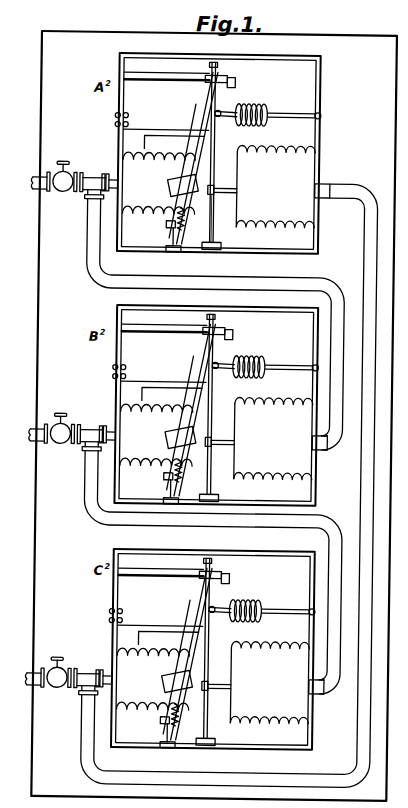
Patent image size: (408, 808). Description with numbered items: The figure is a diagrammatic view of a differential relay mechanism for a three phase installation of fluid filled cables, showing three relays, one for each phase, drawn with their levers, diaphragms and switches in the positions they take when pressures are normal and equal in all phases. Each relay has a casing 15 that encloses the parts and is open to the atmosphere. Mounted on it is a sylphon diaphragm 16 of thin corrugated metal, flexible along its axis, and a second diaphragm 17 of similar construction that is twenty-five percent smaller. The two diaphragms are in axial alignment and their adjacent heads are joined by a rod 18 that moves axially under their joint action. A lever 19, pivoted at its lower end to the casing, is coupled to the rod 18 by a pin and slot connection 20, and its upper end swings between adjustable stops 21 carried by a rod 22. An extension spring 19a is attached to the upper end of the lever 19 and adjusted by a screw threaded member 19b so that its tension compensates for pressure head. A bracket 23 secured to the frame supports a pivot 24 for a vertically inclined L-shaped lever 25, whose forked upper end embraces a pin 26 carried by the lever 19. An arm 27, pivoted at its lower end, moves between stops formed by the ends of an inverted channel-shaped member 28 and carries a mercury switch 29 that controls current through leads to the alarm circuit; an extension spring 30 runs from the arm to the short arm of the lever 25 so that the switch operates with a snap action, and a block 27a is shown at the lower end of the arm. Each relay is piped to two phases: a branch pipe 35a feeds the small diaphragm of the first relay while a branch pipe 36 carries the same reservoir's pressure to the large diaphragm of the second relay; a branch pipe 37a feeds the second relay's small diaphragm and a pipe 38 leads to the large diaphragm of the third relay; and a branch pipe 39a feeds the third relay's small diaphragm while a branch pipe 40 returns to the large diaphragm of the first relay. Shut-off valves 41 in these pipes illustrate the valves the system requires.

The casing 15 is at (234, 153).
The diaphragm 16 is at (286, 434).
The second diaphragm 17 is at (144, 428).
The rod 18 is at (239, 181).
The lever 19 is at (224, 218).
The extension spring 19a is at (266, 103).
The screw threaded member 19b is at (294, 107).
The pin and slot connection 20 is at (221, 196).
The adjustable stops 21 is at (225, 65).
The rod 22 is at (166, 86).
The bracket 23 is at (166, 122).
The pivot 24 is at (197, 158).
The L-shaped lever 25 is at (219, 155).
The pin 26 is at (236, 99).
The arm 27 is at (172, 171).
The stop block 27a is at (157, 236).
The inverted channel-shaped member 28 is at (174, 145).
The mercury switch 29 is at (173, 188).
The extension spring 30 is at (205, 219).
The branch pipe 35a is at (34, 165).
The branch pipe 36 is at (89, 236).
The branch pipe 37a is at (28, 419).
The pipe 38 is at (333, 521).
The branch pipe 39a is at (26, 661).
The branch pipe 40 is at (367, 755).
The shut-off valve 41 is at (63, 649).